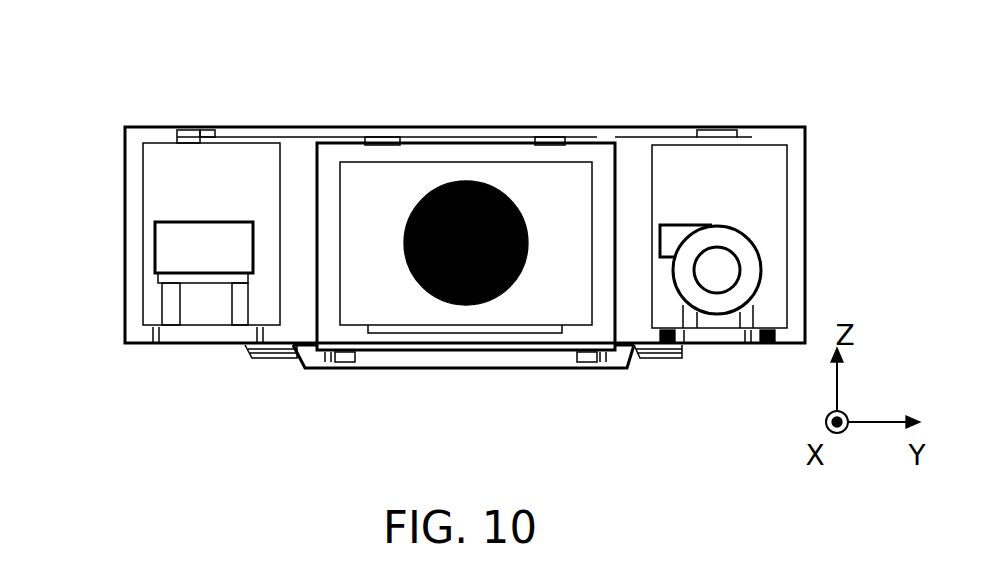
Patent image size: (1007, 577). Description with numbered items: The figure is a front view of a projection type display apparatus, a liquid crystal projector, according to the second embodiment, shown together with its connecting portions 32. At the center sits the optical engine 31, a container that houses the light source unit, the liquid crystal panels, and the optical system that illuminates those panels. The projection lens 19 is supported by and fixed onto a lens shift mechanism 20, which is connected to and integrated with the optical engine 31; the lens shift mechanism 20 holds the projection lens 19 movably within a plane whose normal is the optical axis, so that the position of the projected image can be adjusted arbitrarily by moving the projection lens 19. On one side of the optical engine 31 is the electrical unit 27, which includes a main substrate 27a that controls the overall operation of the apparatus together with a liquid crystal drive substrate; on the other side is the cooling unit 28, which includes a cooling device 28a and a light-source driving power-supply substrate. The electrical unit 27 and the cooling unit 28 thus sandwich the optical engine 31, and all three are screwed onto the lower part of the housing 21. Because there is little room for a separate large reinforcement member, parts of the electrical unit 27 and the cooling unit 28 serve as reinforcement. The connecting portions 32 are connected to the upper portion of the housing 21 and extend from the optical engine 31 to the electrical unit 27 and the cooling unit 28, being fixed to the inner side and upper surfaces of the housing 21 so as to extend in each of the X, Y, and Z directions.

The projection lens 19 is at (447, 303).
The lens shift mechanism 20 is at (545, 348).
The housing 21 is at (125, 167).
The electrical unit 27 is at (188, 207).
The main substrate 27a is at (208, 260).
The cooling unit 28 is at (767, 192).
The cooling device 28a is at (730, 245).
The optical engine 31 is at (468, 145).
The connecting portion 32 is at (185, 128).